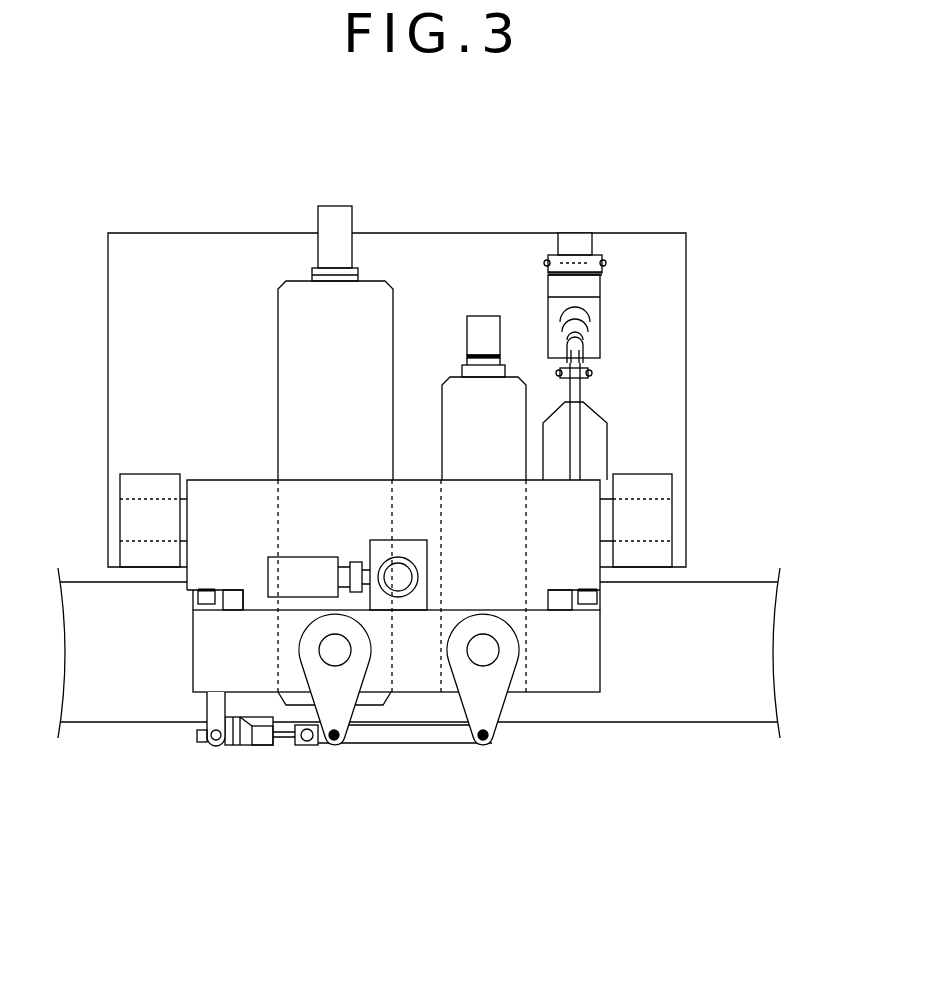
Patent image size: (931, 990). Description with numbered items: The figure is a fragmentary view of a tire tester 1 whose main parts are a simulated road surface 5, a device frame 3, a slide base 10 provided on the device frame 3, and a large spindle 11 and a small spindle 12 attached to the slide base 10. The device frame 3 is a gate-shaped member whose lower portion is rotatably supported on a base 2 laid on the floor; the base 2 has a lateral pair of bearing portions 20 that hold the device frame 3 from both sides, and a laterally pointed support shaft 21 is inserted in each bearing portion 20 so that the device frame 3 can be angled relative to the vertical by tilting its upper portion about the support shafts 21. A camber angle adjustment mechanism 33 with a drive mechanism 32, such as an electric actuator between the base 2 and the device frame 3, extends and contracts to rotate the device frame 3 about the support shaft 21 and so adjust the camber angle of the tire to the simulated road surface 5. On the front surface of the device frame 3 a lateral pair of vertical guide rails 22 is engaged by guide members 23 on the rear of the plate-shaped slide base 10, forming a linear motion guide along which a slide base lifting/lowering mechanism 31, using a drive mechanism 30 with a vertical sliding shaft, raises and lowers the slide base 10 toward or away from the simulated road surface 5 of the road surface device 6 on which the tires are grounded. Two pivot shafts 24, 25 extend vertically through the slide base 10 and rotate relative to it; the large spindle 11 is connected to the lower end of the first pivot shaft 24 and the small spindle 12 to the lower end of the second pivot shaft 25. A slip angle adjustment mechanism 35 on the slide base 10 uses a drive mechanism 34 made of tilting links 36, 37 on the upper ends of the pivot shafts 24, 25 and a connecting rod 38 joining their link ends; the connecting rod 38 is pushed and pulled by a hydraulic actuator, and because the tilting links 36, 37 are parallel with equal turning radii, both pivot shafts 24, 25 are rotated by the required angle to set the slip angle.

The tire tester 1 is at (697, 200).
The base 2 is at (108, 372).
The device frame 3 is at (226, 480).
The simulated road surface 5 is at (440, 682).
The road surface device 6 is at (730, 727).
The slide base 10 is at (601, 683).
The large spindle 11 is at (278, 372).
The small spindle 12 is at (442, 398).
The bearing portions 20 is at (397, 484).
The support shaft 21 is at (147, 497).
The guide rails 22 is at (198, 597).
The guide members 23 is at (222, 605).
The first pivot shaft 24 is at (350, 648).
The second pivot shaft 25 is at (500, 648).
The drive mechanism 30 is at (372, 540).
The slide base lifting/lowering mechanism 31 is at (409, 535).
The drive mechanism 32 is at (601, 330).
The camber angle adjustment mechanism 33 is at (602, 252).
The drive mechanism 34 is at (217, 745).
The slip angle adjustment mechanism 35 is at (377, 740).
The tilting link 36 is at (365, 744).
The tilting link 37 is at (512, 742).
The connecting rod 38 is at (430, 745).